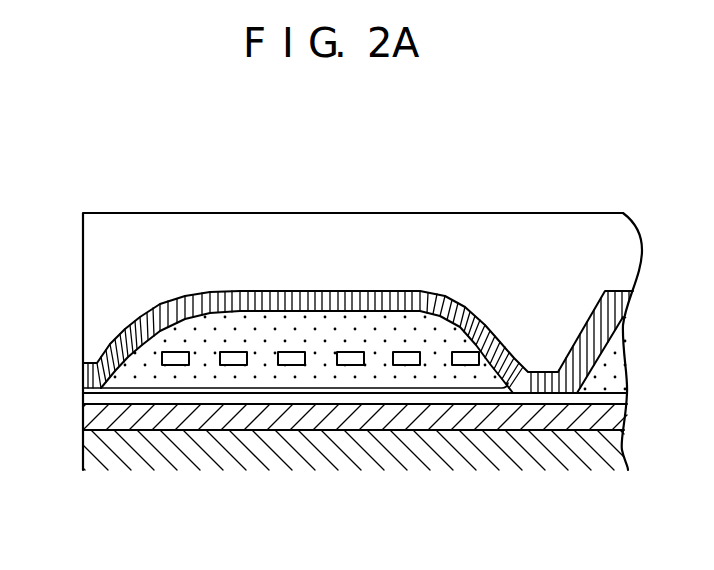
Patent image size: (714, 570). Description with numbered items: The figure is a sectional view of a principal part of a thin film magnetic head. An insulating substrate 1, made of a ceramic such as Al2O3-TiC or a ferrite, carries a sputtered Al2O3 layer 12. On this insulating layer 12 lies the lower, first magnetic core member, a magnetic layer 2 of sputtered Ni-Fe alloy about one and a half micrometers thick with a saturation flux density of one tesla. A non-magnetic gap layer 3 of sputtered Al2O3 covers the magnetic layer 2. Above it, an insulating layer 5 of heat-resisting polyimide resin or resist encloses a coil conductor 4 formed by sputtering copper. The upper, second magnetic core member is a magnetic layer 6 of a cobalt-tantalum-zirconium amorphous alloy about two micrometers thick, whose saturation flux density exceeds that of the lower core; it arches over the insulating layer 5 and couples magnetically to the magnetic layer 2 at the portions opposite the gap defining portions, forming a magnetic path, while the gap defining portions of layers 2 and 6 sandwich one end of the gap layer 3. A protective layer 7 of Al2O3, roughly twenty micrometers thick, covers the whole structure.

The insulating substrate 1 is at (248, 448).
The magnetic layer 2 is at (83, 399).
The gap layer 3 is at (83, 389).
The coil conductor 4 is at (351, 356).
The insulating layer 5 is at (177, 334).
The magnetic layer 6 is at (245, 302).
The protective layer 7 is at (372, 230).
The Al2O3 layer 12 is at (130, 419).